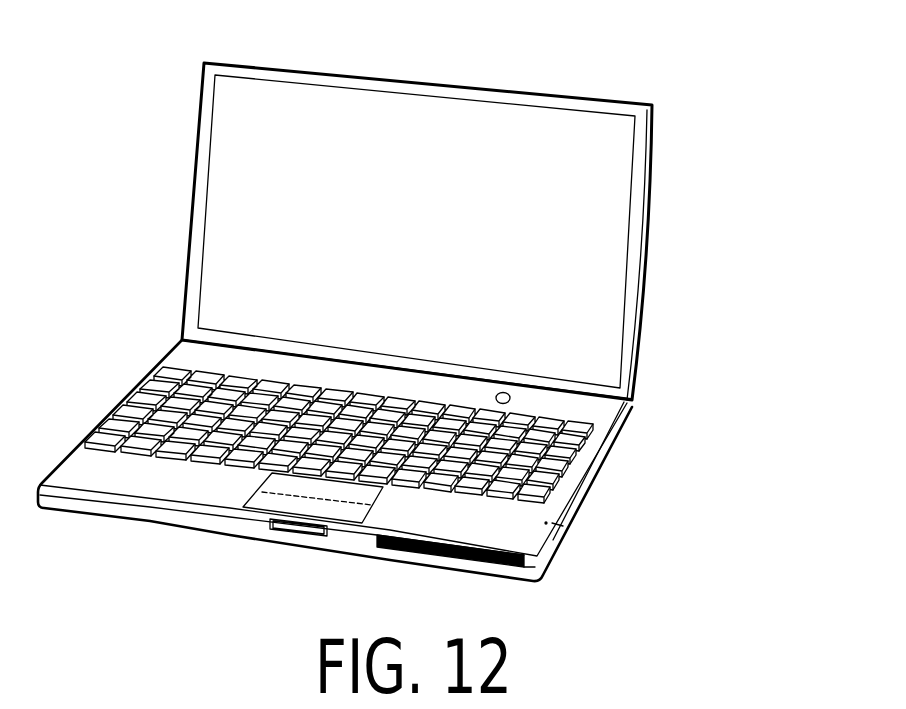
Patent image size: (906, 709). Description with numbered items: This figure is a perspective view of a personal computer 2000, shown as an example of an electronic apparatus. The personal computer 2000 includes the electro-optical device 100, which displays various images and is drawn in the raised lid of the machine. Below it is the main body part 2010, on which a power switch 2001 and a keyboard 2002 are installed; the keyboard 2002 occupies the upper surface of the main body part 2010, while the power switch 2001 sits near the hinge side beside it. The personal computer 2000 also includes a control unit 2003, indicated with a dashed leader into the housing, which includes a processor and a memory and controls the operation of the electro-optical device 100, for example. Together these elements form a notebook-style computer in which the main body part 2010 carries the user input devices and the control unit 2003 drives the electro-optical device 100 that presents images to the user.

The personal computer 2000 is at (138, 219).
The electro-optical device 100 is at (523, 138).
The main body part 2010 is at (60, 458).
The power switch 2001 is at (508, 394).
The keyboard 2002 is at (557, 472).
The control unit 2003 is at (568, 528).